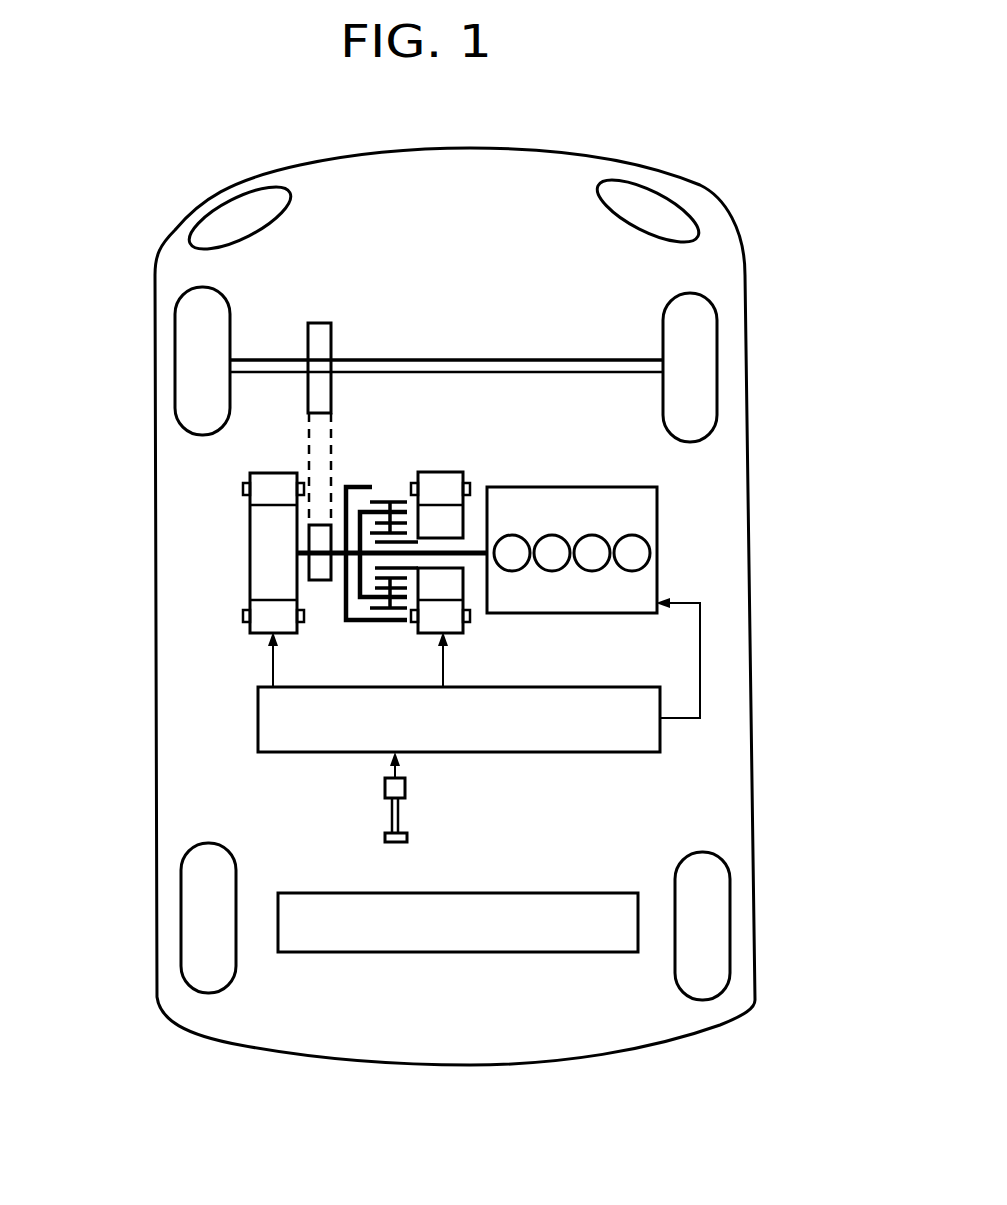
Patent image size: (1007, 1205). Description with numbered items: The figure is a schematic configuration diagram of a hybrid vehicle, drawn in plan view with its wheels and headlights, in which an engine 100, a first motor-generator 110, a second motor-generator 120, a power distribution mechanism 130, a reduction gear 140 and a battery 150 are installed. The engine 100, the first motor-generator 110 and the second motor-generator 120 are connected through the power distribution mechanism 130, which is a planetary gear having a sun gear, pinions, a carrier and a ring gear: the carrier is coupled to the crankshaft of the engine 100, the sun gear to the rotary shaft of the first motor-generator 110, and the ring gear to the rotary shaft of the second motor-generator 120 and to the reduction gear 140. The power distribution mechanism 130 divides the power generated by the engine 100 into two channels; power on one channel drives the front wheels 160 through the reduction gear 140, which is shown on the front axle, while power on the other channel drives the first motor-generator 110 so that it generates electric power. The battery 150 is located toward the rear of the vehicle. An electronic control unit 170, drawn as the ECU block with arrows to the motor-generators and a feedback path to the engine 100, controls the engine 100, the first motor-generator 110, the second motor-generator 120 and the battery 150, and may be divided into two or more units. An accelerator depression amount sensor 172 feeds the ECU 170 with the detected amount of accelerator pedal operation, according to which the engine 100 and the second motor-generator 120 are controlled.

The engine 100 is at (522, 487).
The first motor-generator 110 is at (443, 471).
The second motor-generator 120 is at (250, 553).
The power distribution mechanism 130 is at (374, 487).
The reduction gear 140 is at (318, 307).
The battery 150 is at (427, 952).
The front wheels 160 is at (173, 373).
The electronic control unit (ECU) 170 is at (260, 725).
The accelerator depression amount sensor 172 is at (385, 787).